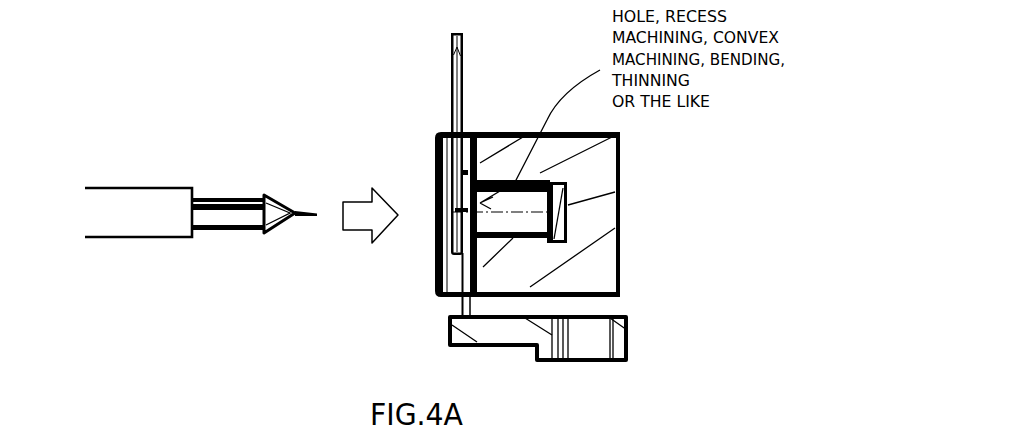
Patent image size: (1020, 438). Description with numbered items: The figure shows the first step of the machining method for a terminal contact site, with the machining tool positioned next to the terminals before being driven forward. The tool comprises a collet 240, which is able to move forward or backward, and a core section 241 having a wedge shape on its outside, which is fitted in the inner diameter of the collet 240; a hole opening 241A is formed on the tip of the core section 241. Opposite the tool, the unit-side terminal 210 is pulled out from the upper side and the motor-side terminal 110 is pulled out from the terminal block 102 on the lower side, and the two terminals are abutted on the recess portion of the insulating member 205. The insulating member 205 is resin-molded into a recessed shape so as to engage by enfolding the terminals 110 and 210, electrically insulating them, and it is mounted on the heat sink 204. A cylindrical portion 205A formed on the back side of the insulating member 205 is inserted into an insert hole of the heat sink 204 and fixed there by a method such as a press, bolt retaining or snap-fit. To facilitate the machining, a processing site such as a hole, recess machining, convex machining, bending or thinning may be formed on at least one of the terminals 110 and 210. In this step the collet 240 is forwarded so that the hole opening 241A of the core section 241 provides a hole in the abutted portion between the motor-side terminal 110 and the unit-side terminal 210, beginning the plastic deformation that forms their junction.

The collet 240 is at (142, 188).
The core section 241 is at (223, 199).
The hole opening 241A is at (303, 218).
The unit-side terminal 210 is at (450, 64).
The insulating member 205 is at (435, 172).
The heat sink 204 is at (560, 215).
The cylindrical portion 205A is at (567, 228).
The motor-side terminal 110 is at (458, 298).
The terminal block 102 is at (630, 342).